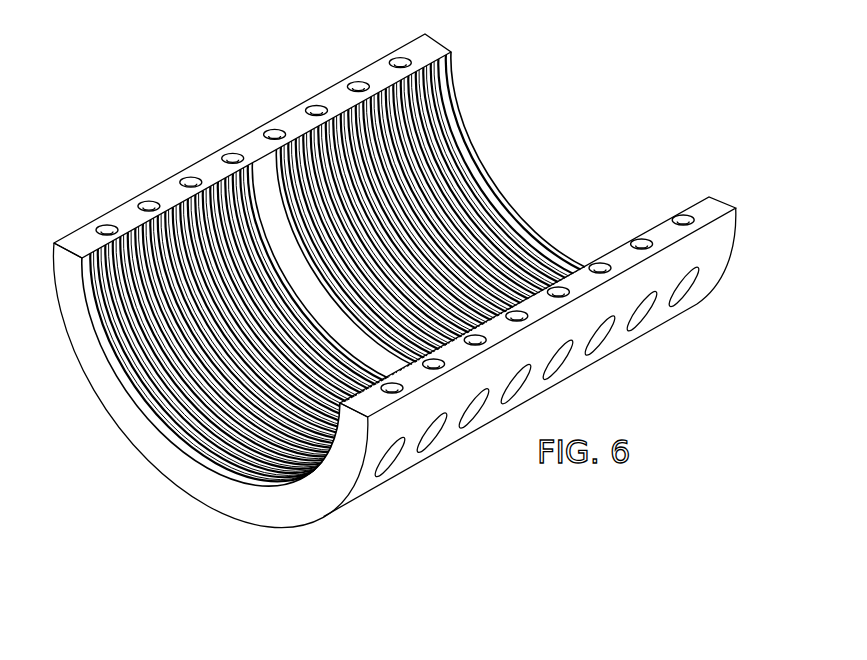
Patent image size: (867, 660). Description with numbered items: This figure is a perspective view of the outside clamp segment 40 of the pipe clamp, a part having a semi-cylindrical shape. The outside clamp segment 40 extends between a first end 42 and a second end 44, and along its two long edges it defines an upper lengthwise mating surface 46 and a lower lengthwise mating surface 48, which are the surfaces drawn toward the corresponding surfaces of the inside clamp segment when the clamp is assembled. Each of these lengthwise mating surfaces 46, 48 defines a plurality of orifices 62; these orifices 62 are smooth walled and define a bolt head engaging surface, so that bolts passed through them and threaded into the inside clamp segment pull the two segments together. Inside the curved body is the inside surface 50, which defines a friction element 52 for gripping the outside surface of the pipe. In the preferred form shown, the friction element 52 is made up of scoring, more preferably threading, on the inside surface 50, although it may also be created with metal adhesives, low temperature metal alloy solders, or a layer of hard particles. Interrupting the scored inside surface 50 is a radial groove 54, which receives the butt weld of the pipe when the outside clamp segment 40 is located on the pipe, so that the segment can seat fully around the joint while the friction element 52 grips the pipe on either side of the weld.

The outside clamp segment 40 is at (636, 88).
The first end 42 is at (121, 478).
The second end 44 is at (552, 202).
The upper lengthwise mating surface 46 is at (167, 188).
The lower lengthwise mating surface 48 is at (712, 207).
The inside surface 50 is at (500, 210).
The friction element 52 is at (395, 208).
The radial groove 54 is at (256, 158).
The orifices 62 is at (398, 55).